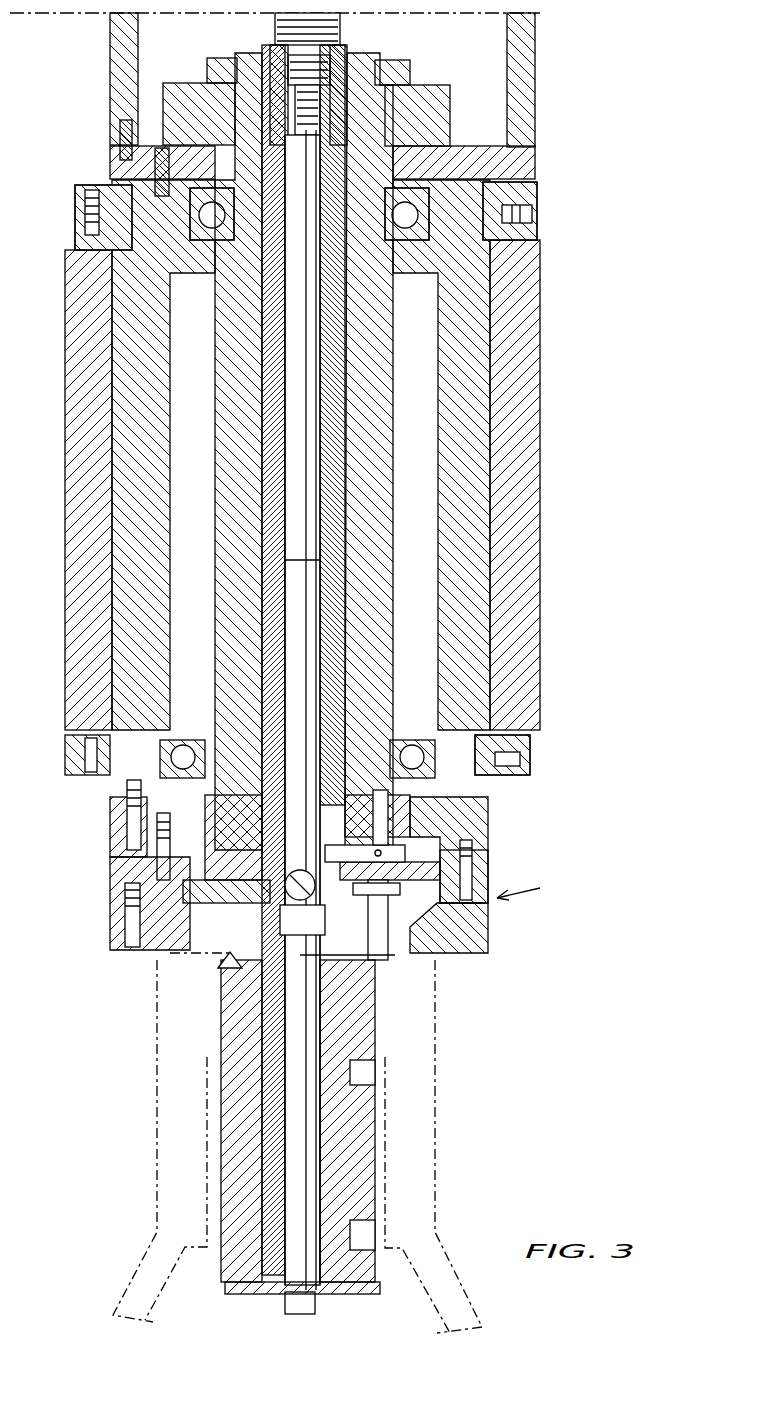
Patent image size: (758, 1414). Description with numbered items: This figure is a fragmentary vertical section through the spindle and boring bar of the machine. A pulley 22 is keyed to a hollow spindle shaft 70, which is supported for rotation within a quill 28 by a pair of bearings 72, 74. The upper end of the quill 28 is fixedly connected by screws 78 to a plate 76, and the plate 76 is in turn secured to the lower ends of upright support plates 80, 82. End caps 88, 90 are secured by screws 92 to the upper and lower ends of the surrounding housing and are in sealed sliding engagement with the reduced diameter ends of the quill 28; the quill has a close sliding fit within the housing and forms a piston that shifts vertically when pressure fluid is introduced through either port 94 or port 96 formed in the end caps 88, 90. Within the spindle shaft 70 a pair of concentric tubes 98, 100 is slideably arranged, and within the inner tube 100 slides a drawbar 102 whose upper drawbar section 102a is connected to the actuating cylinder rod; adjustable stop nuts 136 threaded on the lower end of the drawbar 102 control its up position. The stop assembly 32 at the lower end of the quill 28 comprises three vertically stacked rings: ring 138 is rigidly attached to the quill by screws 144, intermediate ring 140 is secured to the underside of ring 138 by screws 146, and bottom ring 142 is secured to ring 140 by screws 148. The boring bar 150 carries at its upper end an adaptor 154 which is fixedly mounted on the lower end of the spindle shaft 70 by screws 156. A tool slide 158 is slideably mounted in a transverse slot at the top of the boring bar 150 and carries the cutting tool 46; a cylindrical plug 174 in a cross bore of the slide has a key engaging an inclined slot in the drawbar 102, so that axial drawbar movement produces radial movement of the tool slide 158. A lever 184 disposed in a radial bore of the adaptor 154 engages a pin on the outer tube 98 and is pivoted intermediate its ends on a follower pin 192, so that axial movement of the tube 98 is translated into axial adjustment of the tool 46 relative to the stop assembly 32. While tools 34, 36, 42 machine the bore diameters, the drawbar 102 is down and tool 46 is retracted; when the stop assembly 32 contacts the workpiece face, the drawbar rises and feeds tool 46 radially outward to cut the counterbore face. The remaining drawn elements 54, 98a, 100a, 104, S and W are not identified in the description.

The pulley 22 is at (440, 110).
The quill 28 is at (440, 505).
The stop assembly 32 is at (534, 887).
The tool 34 is at (375, 1255).
The tool 36 is at (378, 1072).
The tool 42 is at (222, 962).
The cutting tool 46 is at (383, 964).
The outer housing 54 is at (540, 470).
The hollow spindle shaft 70 is at (378, 468).
The bearing 72 is at (388, 240).
The bearing 74 is at (402, 741).
The plate 76 is at (532, 160).
The screws 78 is at (170, 165).
The upright support plate 80 is at (115, 76).
The upright support plate 82 is at (532, 88).
The end cap 88 is at (530, 768).
The end cap 90 is at (534, 190).
The screws 92 is at (88, 215).
The port 94 is at (530, 752).
The port 96 is at (534, 213).
The outer tube 98 is at (340, 345).
The nut 98a is at (342, 30).
The inner tube 100 is at (278, 480).
The shaft top end 100a is at (290, 60).
The drawbar 102 is at (312, 320).
The upper drawbar section 102a is at (297, 97).
The cap 104 is at (408, 72).
The adjustable stop nuts 136 is at (315, 1302).
The ring 138 is at (488, 815).
The intermediate ring 140 is at (488, 880).
The bottom ring 142 is at (490, 930).
The screws 144 is at (118, 815).
The screws 146 is at (472, 862).
The screws 148 is at (125, 925).
The boring bar 150 is at (375, 1005).
The adaptor 154 is at (235, 808).
The screws 156 is at (160, 835).
The tool slide 158 is at (303, 905).
The cylindrical plug 174 is at (290, 870).
The lever 184 is at (385, 855).
The follower pin 192 is at (378, 790).
The section plane S is at (170, 955).
The workpiece W is at (436, 1098).